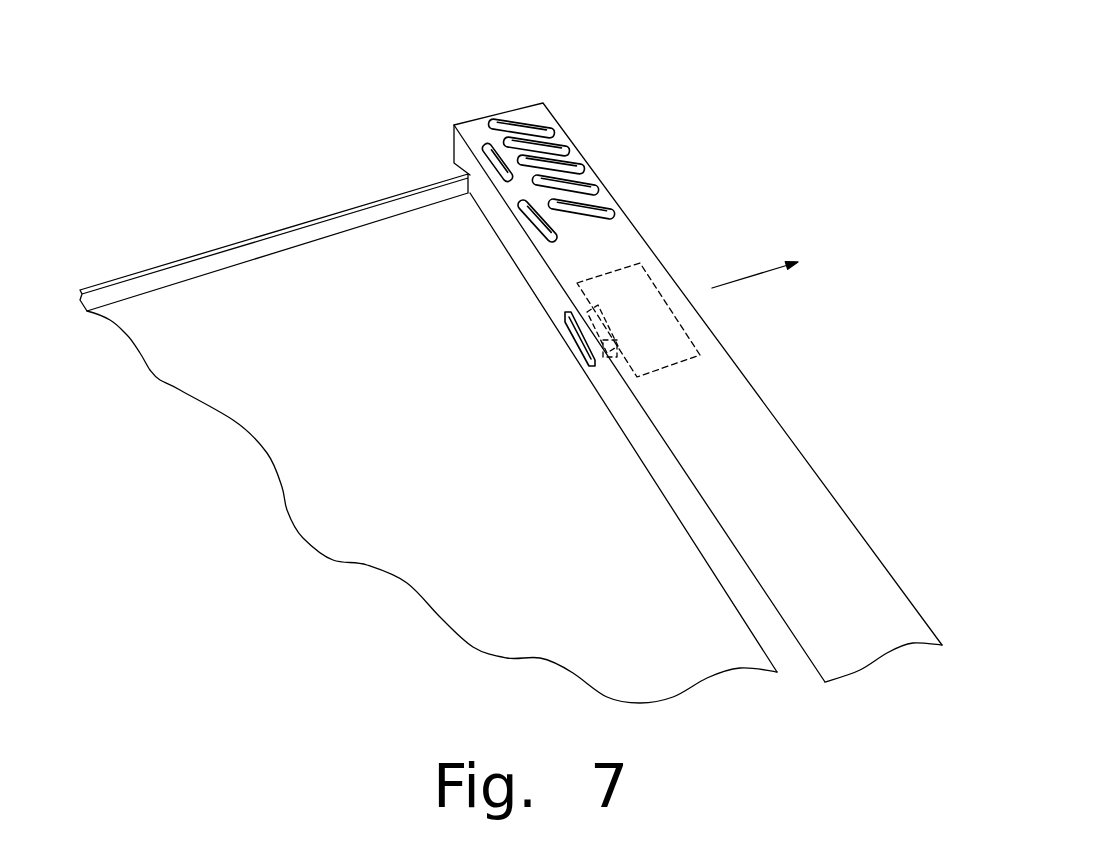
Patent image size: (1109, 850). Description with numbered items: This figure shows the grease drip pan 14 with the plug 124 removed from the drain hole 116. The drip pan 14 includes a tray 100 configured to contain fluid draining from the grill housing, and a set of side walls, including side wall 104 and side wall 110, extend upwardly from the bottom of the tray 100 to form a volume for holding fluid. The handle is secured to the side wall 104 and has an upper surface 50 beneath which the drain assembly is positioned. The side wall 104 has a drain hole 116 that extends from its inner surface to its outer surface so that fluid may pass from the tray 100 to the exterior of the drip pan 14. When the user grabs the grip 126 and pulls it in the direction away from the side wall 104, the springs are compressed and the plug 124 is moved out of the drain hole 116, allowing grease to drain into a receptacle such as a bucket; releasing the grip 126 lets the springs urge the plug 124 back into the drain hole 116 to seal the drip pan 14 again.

The drip pan 14 is at (665, 345).
The upper surface 50 is at (665, 392).
The tray 100 is at (511, 408).
The side wall 104 is at (460, 152).
The side wall 110 is at (177, 297).
The drain hole 116 is at (580, 354).
The plug 124 is at (608, 317).
The grip 126 is at (657, 270).